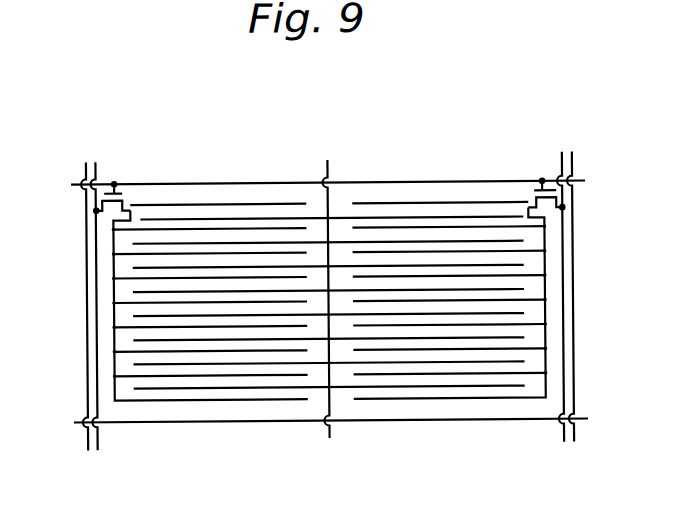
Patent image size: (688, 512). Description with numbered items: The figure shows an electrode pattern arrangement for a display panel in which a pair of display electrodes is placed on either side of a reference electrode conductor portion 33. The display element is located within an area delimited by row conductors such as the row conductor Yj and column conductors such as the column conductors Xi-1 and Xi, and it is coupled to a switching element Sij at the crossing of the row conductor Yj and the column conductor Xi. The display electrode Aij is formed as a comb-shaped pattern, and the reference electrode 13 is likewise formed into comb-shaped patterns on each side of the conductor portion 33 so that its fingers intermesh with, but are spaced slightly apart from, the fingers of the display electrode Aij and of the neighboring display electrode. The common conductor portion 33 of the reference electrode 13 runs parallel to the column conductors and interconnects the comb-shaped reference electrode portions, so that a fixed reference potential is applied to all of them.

The reference electrode 13 is at (328, 279).
The reference electrode conductor portion 33 is at (333, 401).
The column conductor Xi-1 is at (87, 172).
The column conductor Xi is at (97, 167).
The row conductor Yj is at (75, 183).
The switching element Sij is at (132, 200).
The display electrode Aij is at (210, 399).